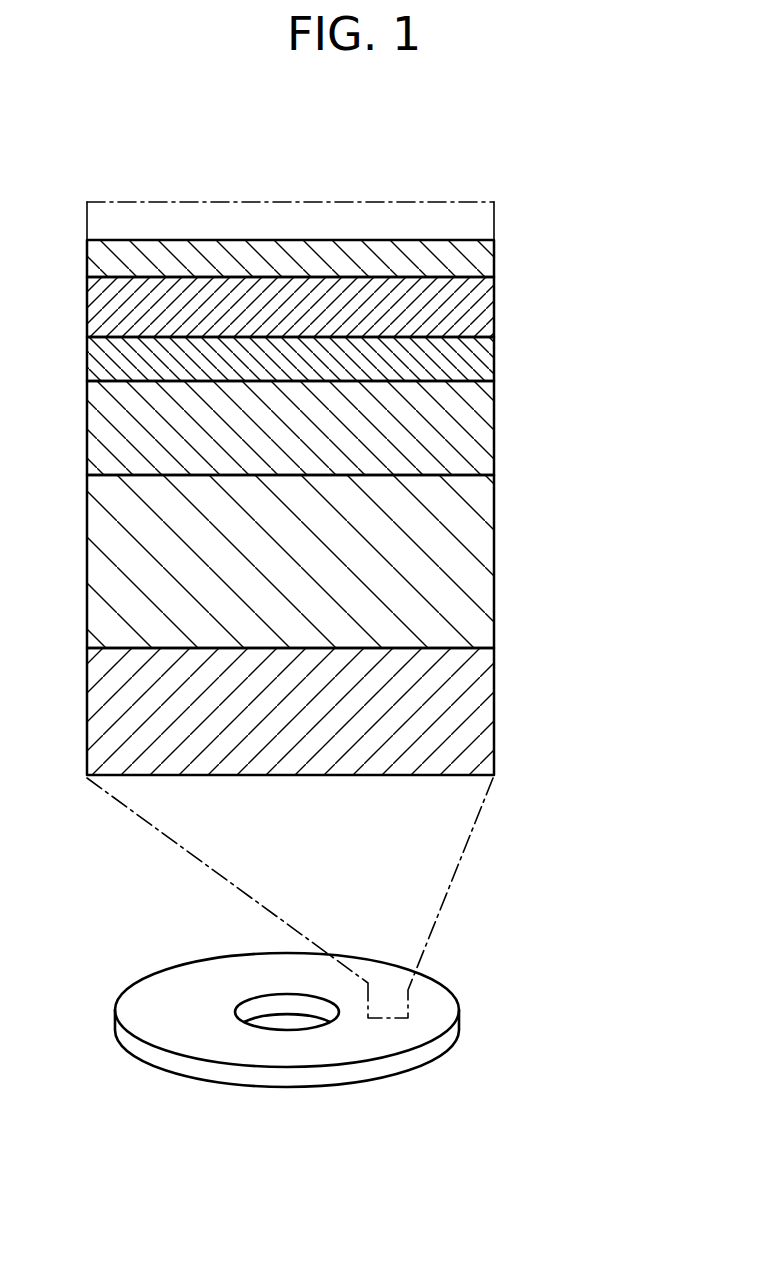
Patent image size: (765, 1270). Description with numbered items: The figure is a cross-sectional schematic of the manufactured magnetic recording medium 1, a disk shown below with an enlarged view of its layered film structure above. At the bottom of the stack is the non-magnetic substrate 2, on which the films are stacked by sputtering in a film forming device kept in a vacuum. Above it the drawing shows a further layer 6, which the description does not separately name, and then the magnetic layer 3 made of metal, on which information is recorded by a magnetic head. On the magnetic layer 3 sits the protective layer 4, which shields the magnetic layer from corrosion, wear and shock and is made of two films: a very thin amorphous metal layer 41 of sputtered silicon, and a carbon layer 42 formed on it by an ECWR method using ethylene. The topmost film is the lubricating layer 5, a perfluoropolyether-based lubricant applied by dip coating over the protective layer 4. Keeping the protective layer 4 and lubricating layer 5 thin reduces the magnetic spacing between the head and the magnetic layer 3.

The magnetic recording medium 1 is at (458, 1018).
The substrate 2 is at (495, 712).
The magnetic layer 3 is at (495, 439).
The protective layer 4 is at (364, 329).
The amorphous metal layer 41 is at (338, 359).
The carbon layer 42 is at (495, 308).
The lubricating layer 5 is at (495, 265).
The thick layer 6 is at (495, 559).